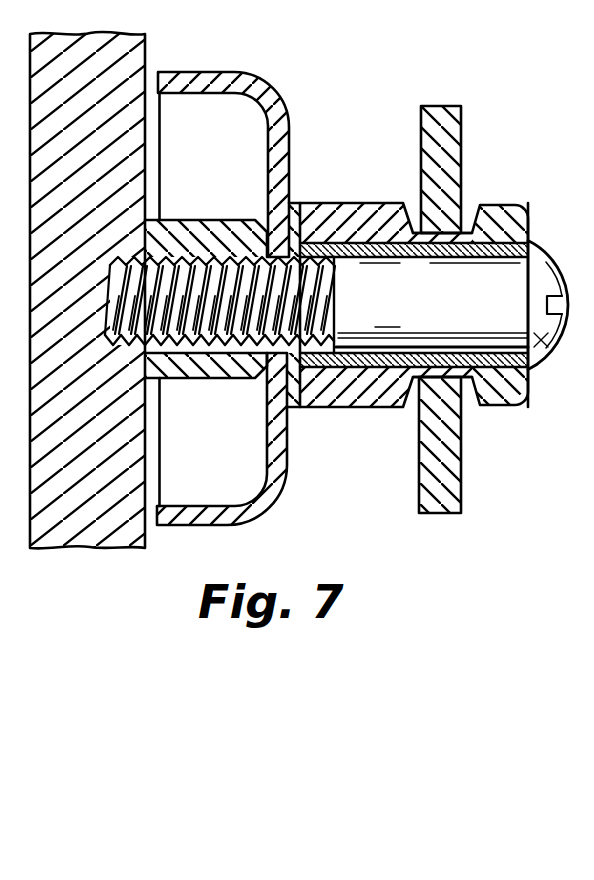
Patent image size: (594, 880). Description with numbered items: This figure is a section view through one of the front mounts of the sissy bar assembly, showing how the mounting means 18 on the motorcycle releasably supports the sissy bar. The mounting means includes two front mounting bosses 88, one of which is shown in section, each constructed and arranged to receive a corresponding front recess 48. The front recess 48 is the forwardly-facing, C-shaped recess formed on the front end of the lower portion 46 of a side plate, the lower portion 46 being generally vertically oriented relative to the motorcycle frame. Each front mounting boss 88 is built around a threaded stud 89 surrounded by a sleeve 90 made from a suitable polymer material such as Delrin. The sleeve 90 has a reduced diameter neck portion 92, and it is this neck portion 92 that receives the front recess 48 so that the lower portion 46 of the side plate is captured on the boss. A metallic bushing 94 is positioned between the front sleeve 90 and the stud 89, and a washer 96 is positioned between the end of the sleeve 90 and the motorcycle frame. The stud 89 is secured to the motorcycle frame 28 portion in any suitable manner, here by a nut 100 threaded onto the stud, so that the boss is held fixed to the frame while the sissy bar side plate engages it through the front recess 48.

The mounting means 18 is at (345, 418).
The motorcycle frame portion 28 is at (248, 80).
The lower portion 46 is at (443, 110).
The front recess 48 is at (448, 380).
The front mounting boss 88 is at (367, 150).
The threaded stud 89 is at (544, 344).
The sleeve 90 is at (389, 202).
The reduced diameter neck portion 92 is at (440, 232).
The metallic bushing 94 is at (514, 224).
The washer 96 is at (298, 200).
The nut 100 is at (173, 380).